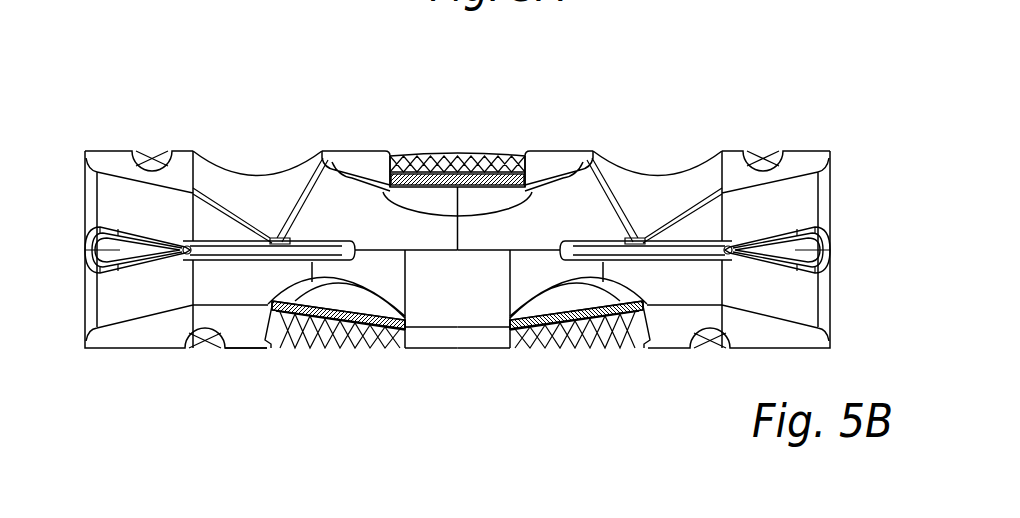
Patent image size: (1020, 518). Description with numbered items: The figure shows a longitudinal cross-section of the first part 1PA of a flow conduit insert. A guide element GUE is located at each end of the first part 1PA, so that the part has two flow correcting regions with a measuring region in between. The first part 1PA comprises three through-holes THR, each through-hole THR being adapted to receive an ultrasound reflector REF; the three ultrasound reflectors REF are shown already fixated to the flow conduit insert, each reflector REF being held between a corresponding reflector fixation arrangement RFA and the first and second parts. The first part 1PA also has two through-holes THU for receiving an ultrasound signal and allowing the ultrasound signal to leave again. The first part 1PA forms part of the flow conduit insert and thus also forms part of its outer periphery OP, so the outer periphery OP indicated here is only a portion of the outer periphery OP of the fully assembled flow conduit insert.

The first part 1PA is at (151, 54).
The through-hole THU is at (253, 150).
The through-hole THR is at (440, 119).
The reflector fixation arrangement RFA is at (415, 158).
The ultrasound reflector REF is at (468, 187).
The guide element GUE is at (85, 250).
The outer periphery OP is at (132, 348).